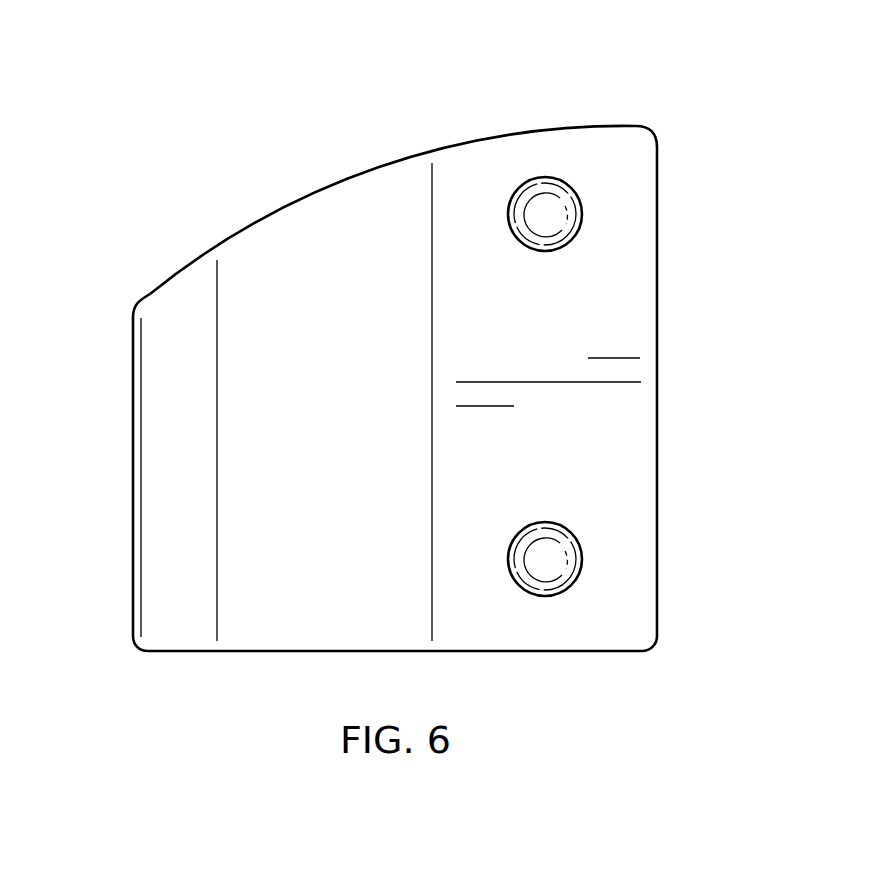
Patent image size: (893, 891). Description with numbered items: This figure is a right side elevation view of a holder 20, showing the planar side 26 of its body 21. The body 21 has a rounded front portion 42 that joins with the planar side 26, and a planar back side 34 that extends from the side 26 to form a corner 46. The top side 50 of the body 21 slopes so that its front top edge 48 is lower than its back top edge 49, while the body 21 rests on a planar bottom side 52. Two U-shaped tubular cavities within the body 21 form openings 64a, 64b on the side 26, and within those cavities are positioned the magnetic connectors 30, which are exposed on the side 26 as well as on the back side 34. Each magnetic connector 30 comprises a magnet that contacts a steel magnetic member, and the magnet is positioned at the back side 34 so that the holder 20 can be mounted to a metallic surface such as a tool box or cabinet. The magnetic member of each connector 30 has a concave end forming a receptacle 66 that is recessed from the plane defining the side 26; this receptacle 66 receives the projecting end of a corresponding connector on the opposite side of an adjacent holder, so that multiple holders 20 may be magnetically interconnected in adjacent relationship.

The holder 20 is at (195, 54).
The body 21 is at (126, 363).
The side 26 is at (583, 317).
The magnetic connector 30 is at (509, 246).
The back side 34 is at (657, 426).
The rounded front portion 42 is at (130, 494).
The corner 46 is at (657, 513).
The front top edge 48 is at (152, 291).
The back top edge 49 is at (627, 127).
The top side 50 is at (357, 178).
The bottom side 52 is at (543, 652).
The opening 64a is at (582, 206).
The opening 64b is at (581, 573).
The receptacle 66 is at (548, 210).